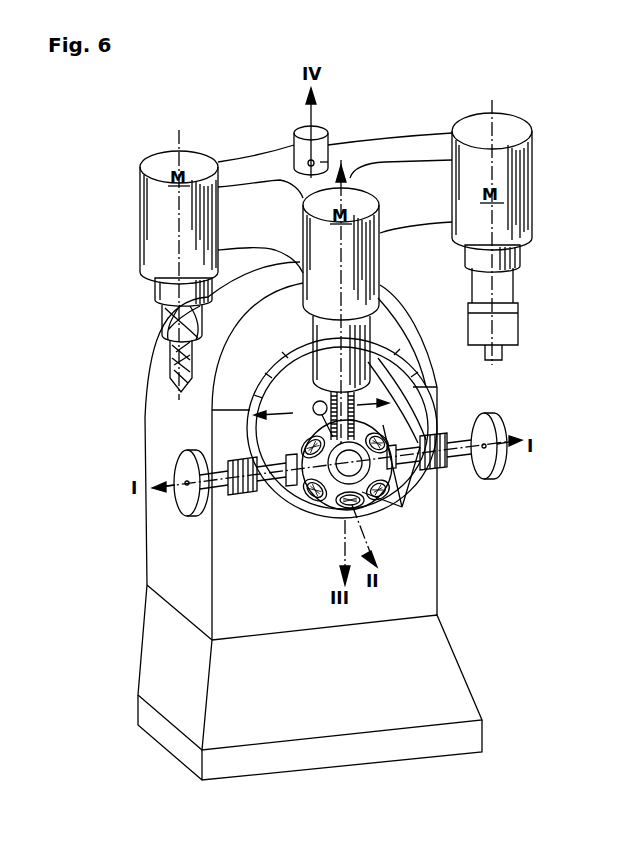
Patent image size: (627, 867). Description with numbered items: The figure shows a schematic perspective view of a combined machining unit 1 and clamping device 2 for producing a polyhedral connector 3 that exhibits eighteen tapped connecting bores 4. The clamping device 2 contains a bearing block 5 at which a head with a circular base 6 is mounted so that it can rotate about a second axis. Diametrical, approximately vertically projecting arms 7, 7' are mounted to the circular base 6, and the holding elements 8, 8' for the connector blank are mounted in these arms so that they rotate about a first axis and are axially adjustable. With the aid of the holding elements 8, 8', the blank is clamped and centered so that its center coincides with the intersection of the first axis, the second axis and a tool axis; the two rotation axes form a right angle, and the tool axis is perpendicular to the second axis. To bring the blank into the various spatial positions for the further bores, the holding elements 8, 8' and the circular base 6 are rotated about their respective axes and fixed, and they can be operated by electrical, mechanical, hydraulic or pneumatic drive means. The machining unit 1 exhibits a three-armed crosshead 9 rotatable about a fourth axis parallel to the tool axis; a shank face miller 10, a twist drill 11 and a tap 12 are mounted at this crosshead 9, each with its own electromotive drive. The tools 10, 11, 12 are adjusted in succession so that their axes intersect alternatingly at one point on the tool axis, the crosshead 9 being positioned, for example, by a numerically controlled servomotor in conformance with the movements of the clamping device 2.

The machining unit 1 is at (397, 138).
The clamping device 2 is at (443, 497).
The polyhedral connector 3 is at (328, 508).
The tapped connecting bores 4 is at (401, 512).
The bearing block 5 is at (425, 588).
The circular base 6 is at (287, 507).
The arm 7 is at (234, 424).
The arm 7' is at (416, 392).
The holding element 8 is at (249, 498).
The holding element 8' is at (431, 472).
The three-armed crosshead 9 is at (410, 210).
The shank face miller 10 is at (508, 330).
The twist drill 11 is at (163, 365).
The tap 12 is at (353, 398).